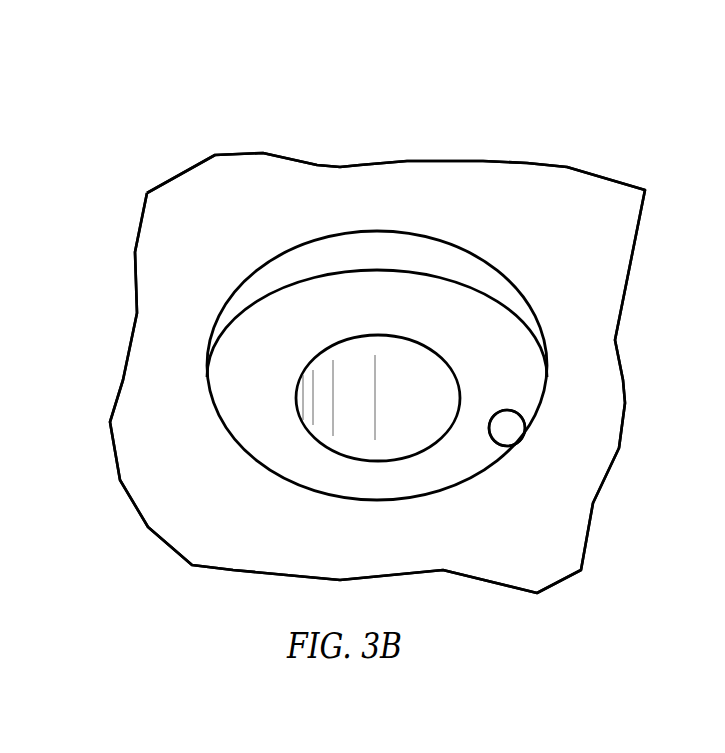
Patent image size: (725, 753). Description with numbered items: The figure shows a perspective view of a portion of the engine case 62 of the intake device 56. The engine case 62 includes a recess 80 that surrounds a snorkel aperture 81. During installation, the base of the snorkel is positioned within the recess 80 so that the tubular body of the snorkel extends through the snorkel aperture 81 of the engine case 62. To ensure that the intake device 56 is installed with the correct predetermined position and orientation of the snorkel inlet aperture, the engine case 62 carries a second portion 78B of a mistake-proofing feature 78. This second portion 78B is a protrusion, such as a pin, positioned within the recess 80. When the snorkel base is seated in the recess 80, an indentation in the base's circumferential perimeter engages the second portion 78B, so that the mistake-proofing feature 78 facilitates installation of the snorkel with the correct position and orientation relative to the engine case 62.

The intake device 56 is at (524, 98).
The engine case 62 is at (575, 205).
The recess 80 is at (300, 293).
The snorkel aperture 81 is at (390, 378).
The mistake-proofing feature 78 is at (508, 430).
The second portion of the mistake-proofing feature 78B is at (507, 428).